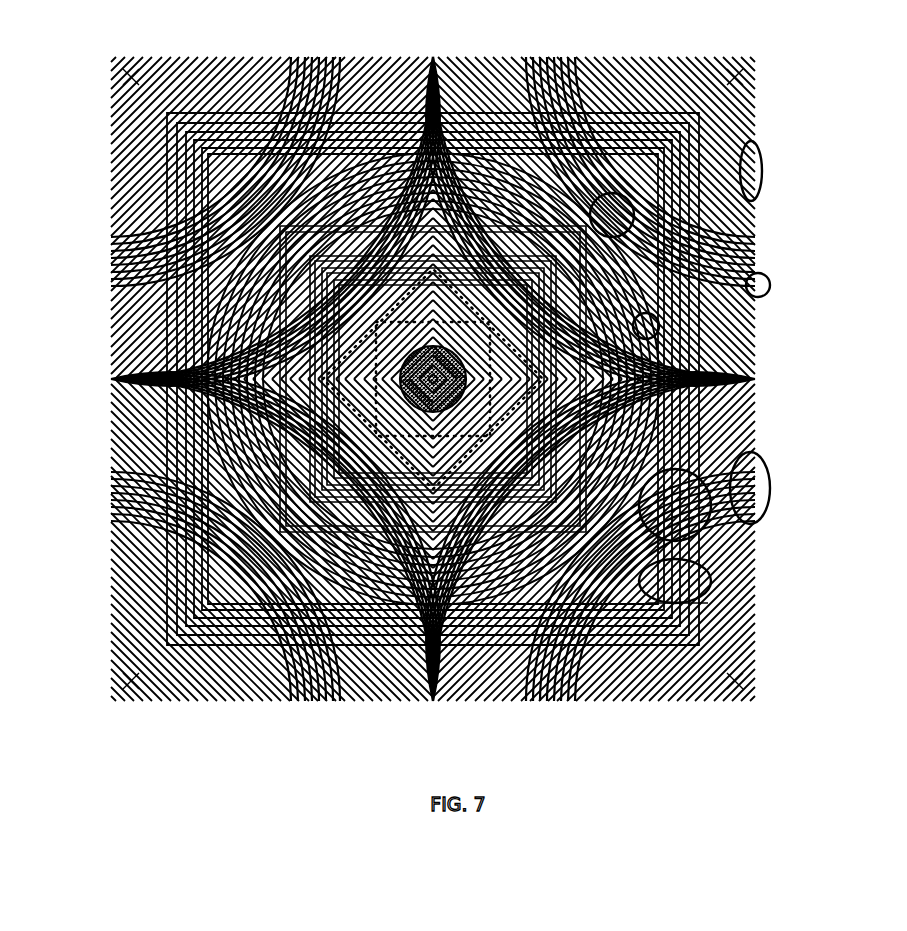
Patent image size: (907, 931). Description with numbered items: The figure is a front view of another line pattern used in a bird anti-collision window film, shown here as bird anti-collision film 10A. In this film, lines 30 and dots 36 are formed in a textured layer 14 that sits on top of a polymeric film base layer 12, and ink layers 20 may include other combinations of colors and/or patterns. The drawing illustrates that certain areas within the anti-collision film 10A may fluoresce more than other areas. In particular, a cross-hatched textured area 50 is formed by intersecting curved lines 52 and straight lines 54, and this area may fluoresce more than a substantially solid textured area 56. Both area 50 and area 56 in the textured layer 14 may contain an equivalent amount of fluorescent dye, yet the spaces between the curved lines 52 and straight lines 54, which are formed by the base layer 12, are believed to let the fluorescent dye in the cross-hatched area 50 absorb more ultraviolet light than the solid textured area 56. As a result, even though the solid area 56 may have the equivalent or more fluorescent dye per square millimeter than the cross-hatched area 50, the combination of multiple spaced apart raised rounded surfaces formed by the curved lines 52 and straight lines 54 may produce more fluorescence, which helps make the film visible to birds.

The bird anti-collision film 10A is at (792, 82).
The polymeric film base layer 12 is at (103, 137).
The textured layer 14 is at (745, 732).
The ink layers 20 is at (103, 391).
The lines 30 is at (103, 235).
The dots 36 is at (103, 92).
The cross-hatched textured area 50 is at (745, 536).
The curved lines 52 is at (762, 462).
The straight lines 54 is at (745, 608).
The substantially solid textured area 56 is at (745, 393).